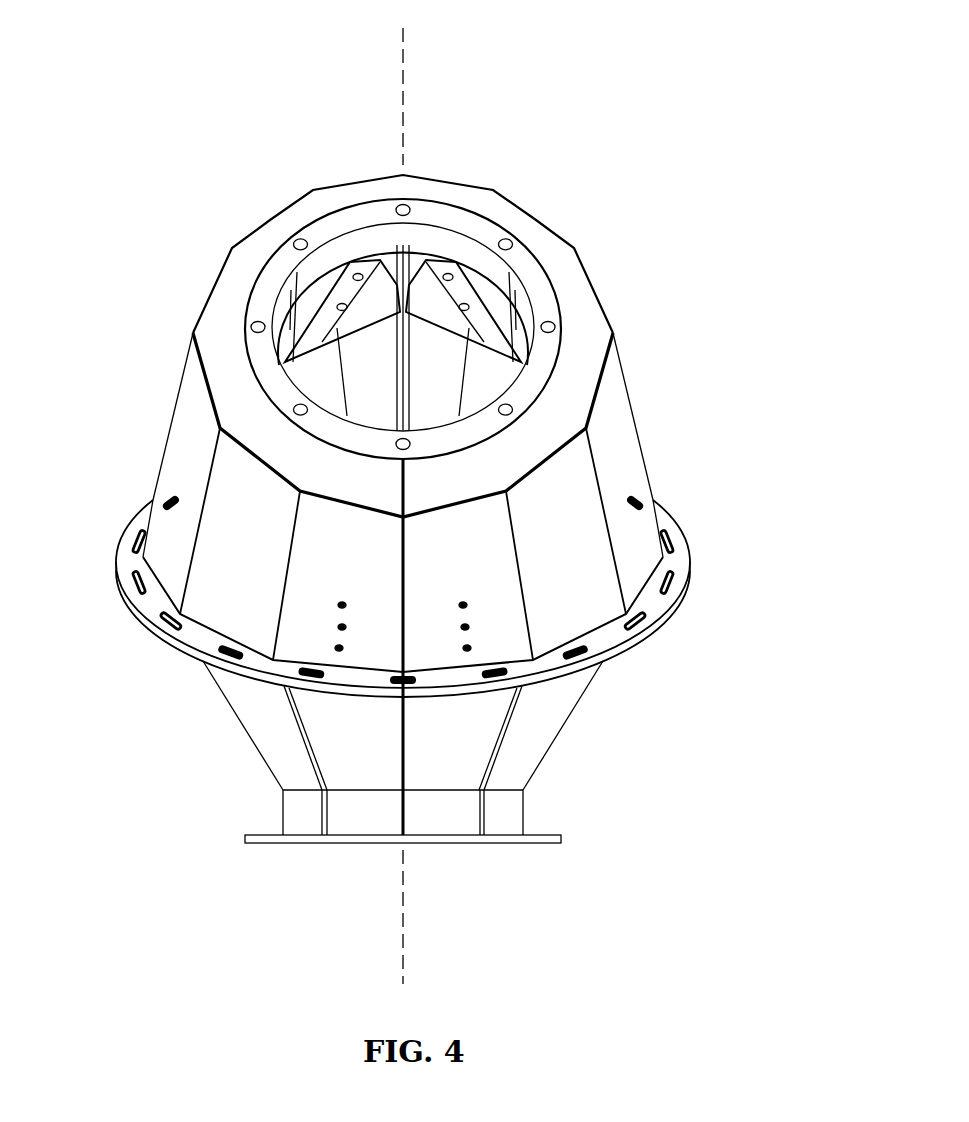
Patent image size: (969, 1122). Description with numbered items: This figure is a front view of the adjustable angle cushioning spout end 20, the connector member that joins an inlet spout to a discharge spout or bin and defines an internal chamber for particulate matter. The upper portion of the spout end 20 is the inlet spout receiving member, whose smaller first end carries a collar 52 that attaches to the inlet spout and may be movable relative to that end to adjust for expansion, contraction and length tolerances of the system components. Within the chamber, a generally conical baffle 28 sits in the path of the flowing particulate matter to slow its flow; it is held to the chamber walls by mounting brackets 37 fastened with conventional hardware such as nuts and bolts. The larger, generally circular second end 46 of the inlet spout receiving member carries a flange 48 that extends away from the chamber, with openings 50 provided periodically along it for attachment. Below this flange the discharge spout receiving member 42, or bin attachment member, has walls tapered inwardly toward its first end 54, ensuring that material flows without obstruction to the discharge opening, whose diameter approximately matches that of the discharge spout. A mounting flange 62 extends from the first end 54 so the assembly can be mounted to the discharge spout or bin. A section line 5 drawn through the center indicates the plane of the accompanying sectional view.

The section line 5- 5 is at (362, 28).
The connector member or spout end 20 is at (549, 140).
The baffle 28 is at (353, 363).
The mounting brackets 37 is at (380, 288).
The discharge spout receiving member 42 is at (467, 764).
The second end 46 is at (476, 566).
The flange 48 is at (683, 556).
The openings 50 is at (680, 522).
The collar 52 is at (540, 302).
The first end 54 is at (488, 845).
The mounting flange 62 is at (547, 836).